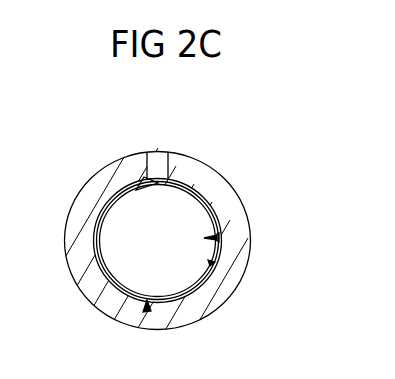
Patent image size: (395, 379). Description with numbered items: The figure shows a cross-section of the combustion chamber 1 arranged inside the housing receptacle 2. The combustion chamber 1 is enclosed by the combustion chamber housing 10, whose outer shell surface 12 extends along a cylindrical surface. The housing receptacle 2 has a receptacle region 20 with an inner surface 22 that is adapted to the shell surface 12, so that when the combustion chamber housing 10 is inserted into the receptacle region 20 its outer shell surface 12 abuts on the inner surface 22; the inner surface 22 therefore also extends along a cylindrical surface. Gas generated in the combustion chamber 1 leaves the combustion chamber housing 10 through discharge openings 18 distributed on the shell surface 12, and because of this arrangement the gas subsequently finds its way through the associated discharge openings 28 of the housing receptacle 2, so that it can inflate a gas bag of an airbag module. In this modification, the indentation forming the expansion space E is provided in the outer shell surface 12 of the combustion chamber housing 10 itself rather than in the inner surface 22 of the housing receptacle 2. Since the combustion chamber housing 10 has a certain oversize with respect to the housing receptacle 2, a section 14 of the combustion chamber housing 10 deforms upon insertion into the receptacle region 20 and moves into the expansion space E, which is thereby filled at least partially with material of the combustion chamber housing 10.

The combustion chamber 1 is at (174, 279).
The housing receptacle 2 is at (213, 186).
The combustion chamber housing 10 is at (147, 305).
The shell surface 12 is at (126, 302).
The section 14 is at (204, 238).
The discharge openings 18 is at (138, 185).
The receptacle region 20 is at (222, 252).
The inner surface 22 is at (214, 264).
The discharge openings 28 is at (157, 160).
The expansion space E is at (222, 243).